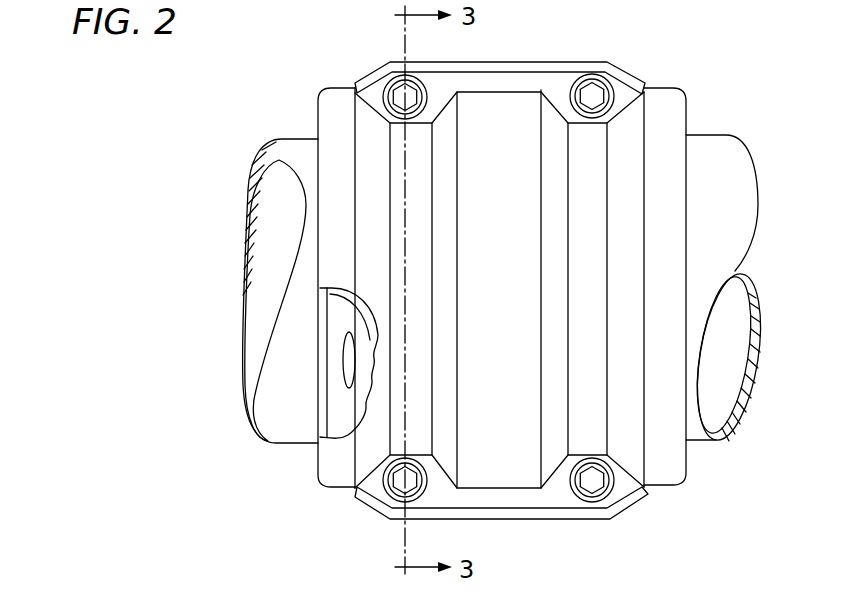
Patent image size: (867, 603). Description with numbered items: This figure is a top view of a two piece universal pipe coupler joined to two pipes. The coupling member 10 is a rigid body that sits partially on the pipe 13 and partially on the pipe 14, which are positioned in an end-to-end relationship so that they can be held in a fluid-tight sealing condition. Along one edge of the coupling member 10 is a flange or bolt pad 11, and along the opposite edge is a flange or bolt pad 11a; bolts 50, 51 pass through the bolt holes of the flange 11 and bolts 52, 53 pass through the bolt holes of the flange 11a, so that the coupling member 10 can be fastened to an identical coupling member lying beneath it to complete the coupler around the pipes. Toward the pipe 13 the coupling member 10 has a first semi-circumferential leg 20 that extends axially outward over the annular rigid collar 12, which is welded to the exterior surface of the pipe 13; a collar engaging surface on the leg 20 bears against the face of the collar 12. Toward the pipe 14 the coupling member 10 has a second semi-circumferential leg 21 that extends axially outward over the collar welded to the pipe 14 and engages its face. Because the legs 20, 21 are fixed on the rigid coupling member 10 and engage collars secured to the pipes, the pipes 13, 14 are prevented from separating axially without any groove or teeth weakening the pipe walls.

The coupling member 10 is at (697, 80).
The flange or bolt pad 11 is at (521, 65).
The flange or bolt pad 11a is at (516, 508).
The annular rigid collar 12 is at (337, 415).
The pipe 13 is at (303, 147).
The pipe 14 is at (728, 157).
The first semi-circumferential leg 20 is at (337, 103).
The second semi-circumferential leg 21 is at (667, 97).
The bolt 50 is at (412, 98).
The bolt 51 is at (597, 78).
The bolt 52 is at (390, 492).
The bolt 53 is at (597, 492).